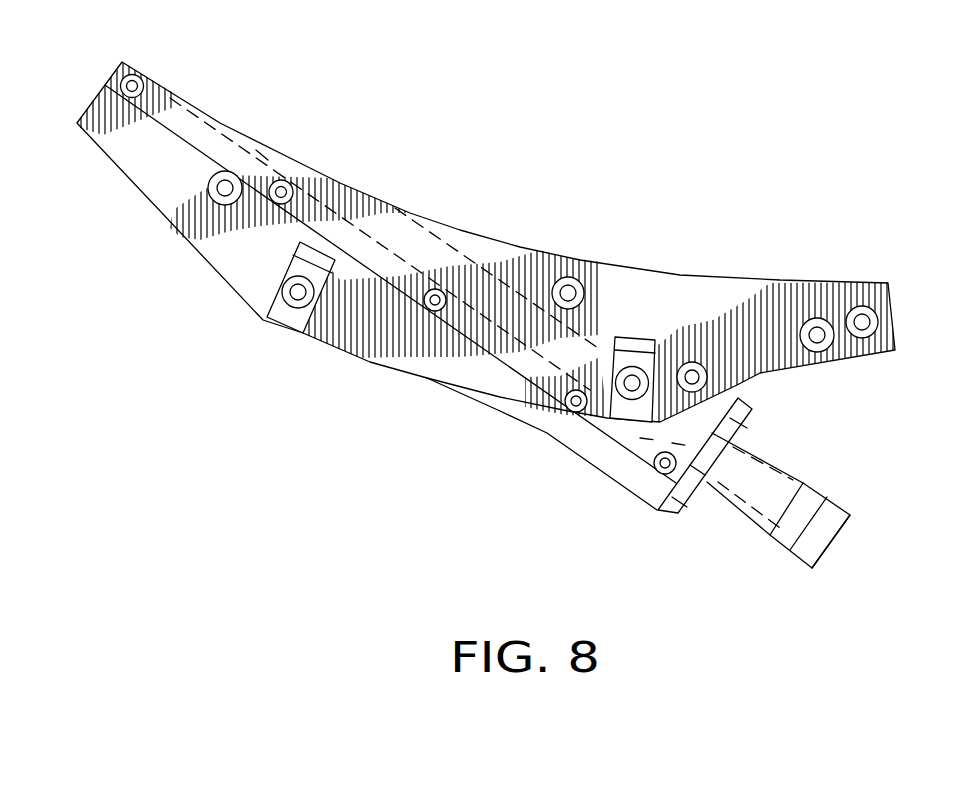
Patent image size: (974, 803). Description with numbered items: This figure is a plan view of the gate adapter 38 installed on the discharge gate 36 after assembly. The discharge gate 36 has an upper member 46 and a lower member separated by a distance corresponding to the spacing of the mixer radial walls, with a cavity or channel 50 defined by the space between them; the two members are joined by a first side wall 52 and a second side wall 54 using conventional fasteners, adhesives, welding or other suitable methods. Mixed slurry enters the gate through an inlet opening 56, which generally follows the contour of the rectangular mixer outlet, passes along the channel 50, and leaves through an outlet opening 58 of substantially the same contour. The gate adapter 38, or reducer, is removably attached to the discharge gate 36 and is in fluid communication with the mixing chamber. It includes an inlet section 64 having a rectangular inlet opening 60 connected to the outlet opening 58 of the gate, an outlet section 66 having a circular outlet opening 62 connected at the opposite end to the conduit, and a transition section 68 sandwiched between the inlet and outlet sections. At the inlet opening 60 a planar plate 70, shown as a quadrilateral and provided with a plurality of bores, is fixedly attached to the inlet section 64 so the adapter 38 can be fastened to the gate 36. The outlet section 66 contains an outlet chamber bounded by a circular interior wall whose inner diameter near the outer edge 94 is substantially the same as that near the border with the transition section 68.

The discharge gate 36 is at (343, 350).
The gate adapter 38 is at (756, 530).
The upper member 46 is at (158, 177).
The cavity or channel 50 is at (458, 240).
The first side wall 52 is at (442, 220).
The second side wall 54 is at (262, 153).
The inlet opening 56 is at (358, 203).
The outlet opening 58 is at (640, 440).
The inlet opening 60 is at (705, 474).
The outlet opening 62 is at (824, 558).
The inlet section 64 is at (803, 480).
The outlet section 66 is at (841, 503).
The transition section 68 is at (758, 458).
The planar plate 70 is at (750, 416).
The outer edge 94 is at (842, 522).